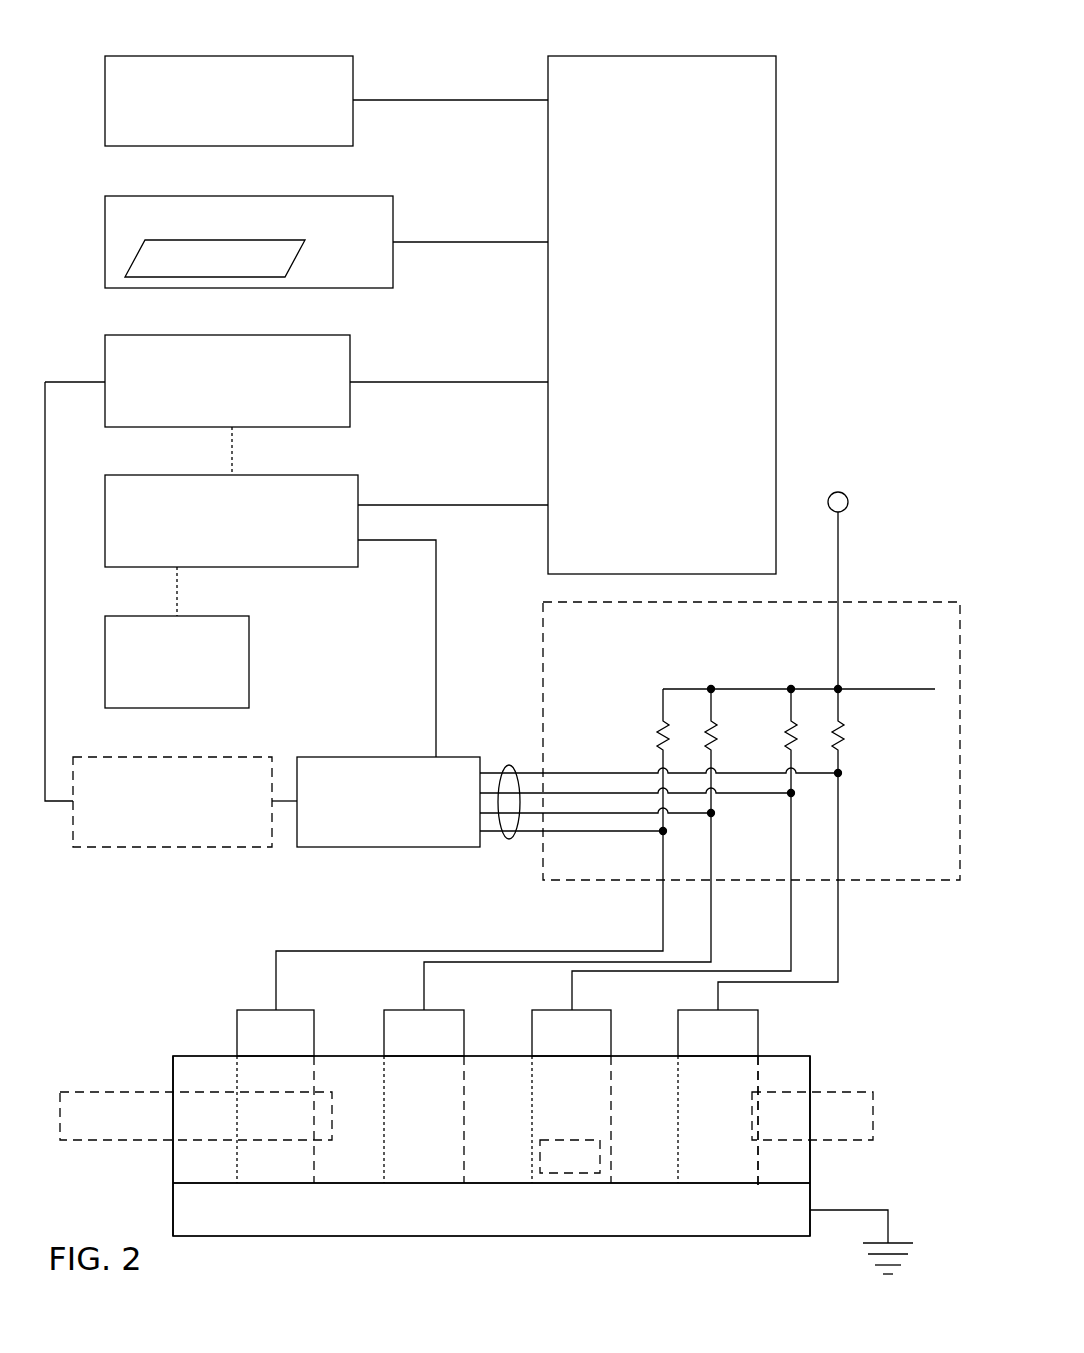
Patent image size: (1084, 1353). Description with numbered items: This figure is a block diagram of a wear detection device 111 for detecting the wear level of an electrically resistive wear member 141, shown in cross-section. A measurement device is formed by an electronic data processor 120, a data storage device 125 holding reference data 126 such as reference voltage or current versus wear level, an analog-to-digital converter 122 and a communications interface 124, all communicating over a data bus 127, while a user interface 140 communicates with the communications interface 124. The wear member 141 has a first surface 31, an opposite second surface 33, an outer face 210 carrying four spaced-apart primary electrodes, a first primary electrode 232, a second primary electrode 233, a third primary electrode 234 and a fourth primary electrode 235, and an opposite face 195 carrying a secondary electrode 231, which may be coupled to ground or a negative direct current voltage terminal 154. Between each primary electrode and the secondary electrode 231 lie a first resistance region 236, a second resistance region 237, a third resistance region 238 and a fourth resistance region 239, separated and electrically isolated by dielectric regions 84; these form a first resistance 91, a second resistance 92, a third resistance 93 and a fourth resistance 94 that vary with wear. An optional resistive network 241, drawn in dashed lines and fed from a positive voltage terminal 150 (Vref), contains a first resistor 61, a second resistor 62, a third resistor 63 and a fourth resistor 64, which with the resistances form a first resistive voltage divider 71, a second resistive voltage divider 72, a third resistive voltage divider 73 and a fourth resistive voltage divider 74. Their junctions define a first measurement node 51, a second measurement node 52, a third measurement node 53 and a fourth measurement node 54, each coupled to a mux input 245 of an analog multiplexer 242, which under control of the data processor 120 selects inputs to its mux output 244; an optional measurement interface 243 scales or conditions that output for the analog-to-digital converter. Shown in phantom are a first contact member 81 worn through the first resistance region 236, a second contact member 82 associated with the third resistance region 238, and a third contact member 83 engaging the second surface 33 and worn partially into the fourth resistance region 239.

The electronic data processor 120 is at (328, 56).
The data storage device 125 is at (372, 196).
The reference data 126 is at (293, 258).
The analog-to-digital converter 122 is at (350, 348).
The communications interface 124 is at (358, 482).
The user interface 140 is at (249, 633).
The data bus 127 is at (776, 160).
The wear detection device 111 is at (845, 256).
The positive direct current voltage terminal 150 is at (848, 500).
The resistive network 241 is at (868, 592).
The measurement interface 243 is at (242, 756).
The analog multiplexer 242 is at (388, 757).
The mux input 245 is at (509, 766).
The mux output 244 is at (283, 803).
The first resistor 61 is at (660, 736).
The second resistor 62 is at (716, 738).
The third resistor 63 is at (790, 740).
The fourth resistor 64 is at (843, 738).
The first measurement node 51 is at (663, 831).
The second measurement node 52 is at (711, 813).
The third measurement node 53 is at (791, 793).
The fourth measurement node 54 is at (838, 773).
The first resistive voltage divider 71 is at (270, 980).
The second resistive voltage divider 72 is at (414, 984).
The third resistive voltage divider 73 is at (560, 993).
The fourth resistive voltage divider 74 is at (706, 993).
The wear member 141 is at (172, 1050).
The outer face 210 is at (797, 1055).
The first surface 31 is at (173, 1160).
The second surface 33 is at (810, 1155).
The opposite face 195 is at (708, 1185).
The secondary electrode 231 is at (588, 1223).
The negative direct current voltage terminal 154 is at (872, 1208).
The first primary electrode 232 is at (300, 1044).
The second primary electrode 233 is at (448, 1044).
The third primary electrode 234 is at (596, 1044).
The fourth primary electrode 235 is at (742, 1044).
The first resistance region 236 is at (299, 1127).
The second resistance region 237 is at (448, 1125).
The third resistance region 238 is at (596, 1127).
The fourth resistance region 239 is at (742, 1127).
The first resistance 91 is at (268, 1073).
The second resistance 92 is at (418, 1078).
The third resistance 93 is at (566, 1076).
The fourth resistance 94 is at (710, 1076).
The first contact member 81 is at (120, 1088).
The second contact member 82 is at (540, 1160).
The third contact member 83 is at (788, 1110).
The dielectric regions 84 is at (808, 1086).